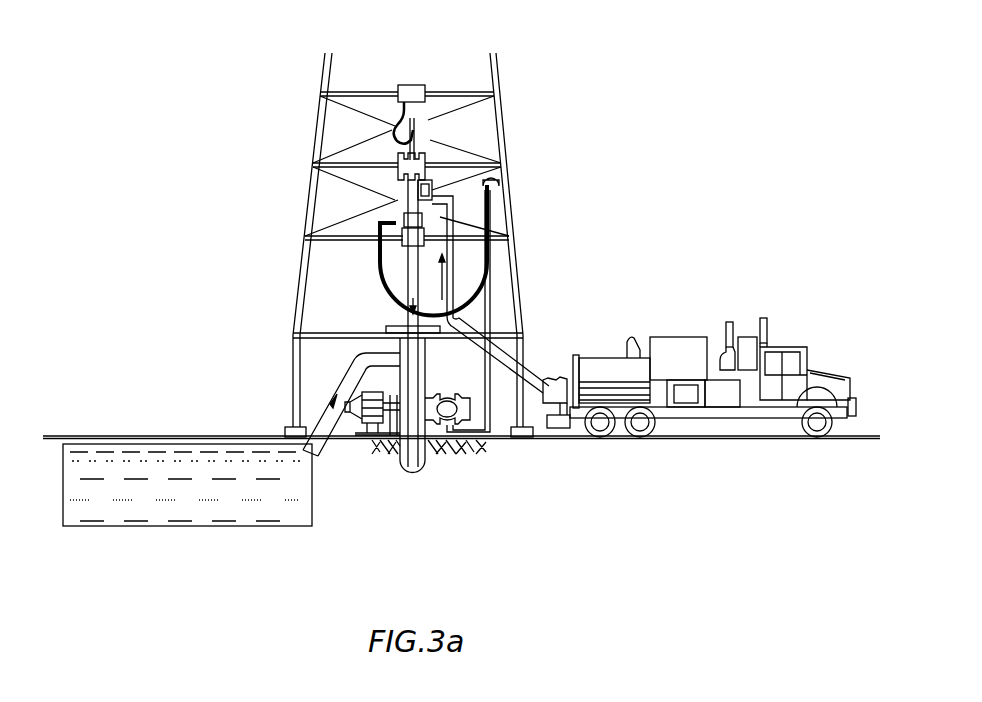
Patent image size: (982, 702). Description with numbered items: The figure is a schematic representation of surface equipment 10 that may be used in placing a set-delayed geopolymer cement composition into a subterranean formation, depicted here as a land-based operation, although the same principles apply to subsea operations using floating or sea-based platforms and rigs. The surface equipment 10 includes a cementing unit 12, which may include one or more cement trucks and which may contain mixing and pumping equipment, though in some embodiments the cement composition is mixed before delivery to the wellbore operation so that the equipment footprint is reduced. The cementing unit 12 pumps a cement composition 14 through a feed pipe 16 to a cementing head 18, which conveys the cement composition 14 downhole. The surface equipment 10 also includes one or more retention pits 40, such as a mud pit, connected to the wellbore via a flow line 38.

The surface equipment 10 is at (736, 93).
The cementing unit 12 is at (752, 420).
The cement composition 14 is at (410, 273).
The feed pipe 16 is at (500, 357).
The cementing head 18 is at (445, 159).
The flow line 38 is at (340, 434).
The retention pit 40 is at (110, 526).